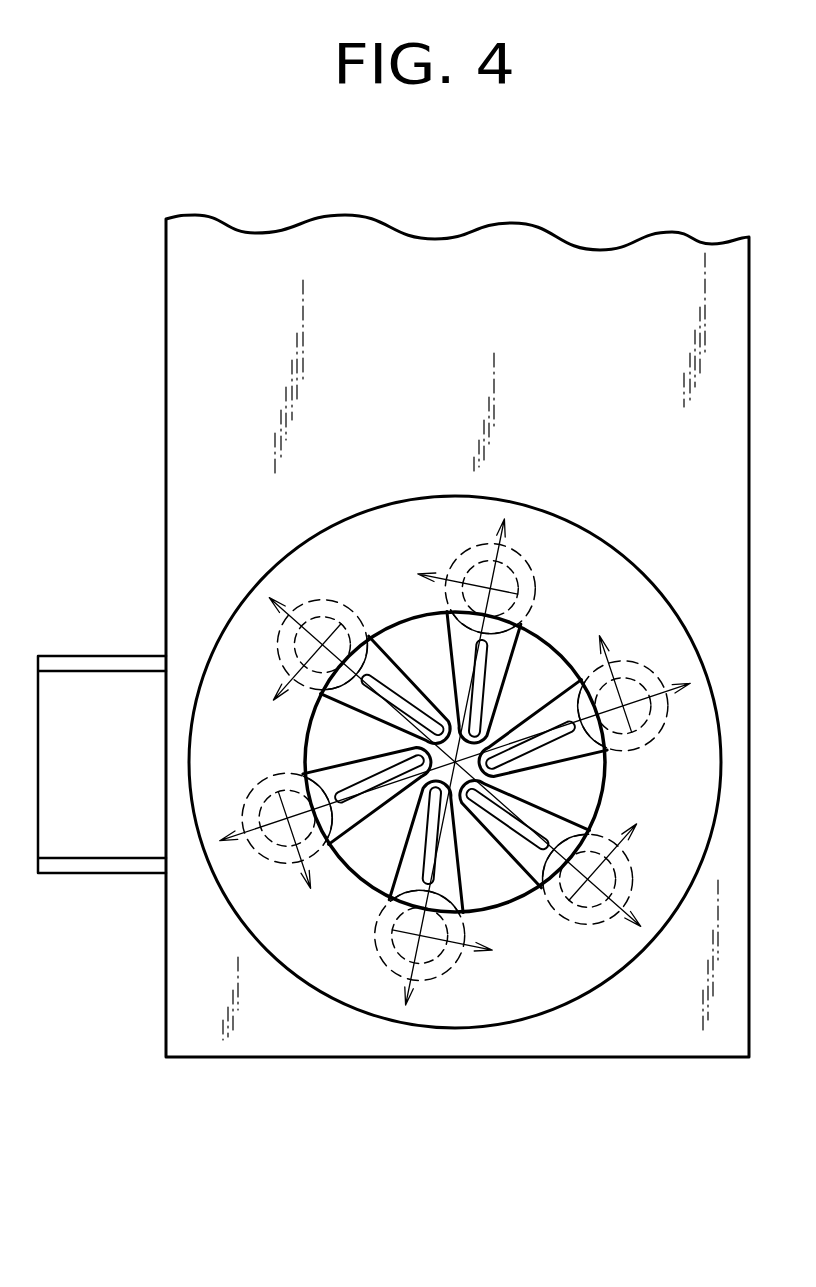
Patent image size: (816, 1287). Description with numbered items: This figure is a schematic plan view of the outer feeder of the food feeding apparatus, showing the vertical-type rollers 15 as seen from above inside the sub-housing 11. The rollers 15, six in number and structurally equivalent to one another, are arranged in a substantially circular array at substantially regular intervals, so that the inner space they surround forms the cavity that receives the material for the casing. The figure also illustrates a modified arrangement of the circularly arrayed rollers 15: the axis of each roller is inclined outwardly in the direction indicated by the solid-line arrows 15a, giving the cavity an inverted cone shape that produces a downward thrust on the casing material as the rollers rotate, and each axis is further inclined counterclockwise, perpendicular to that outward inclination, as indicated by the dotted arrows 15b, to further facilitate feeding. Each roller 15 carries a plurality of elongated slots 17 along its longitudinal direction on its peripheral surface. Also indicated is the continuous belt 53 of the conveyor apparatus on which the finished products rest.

The sub-housing 11 is at (253, 1058).
The vertical-type rollers 15 is at (404, 655).
The solid-line arrows 15a is at (519, 575).
The dotted arrows 15b is at (443, 957).
The elongated slots 17 is at (543, 784).
The continuous belt 53 is at (103, 840).